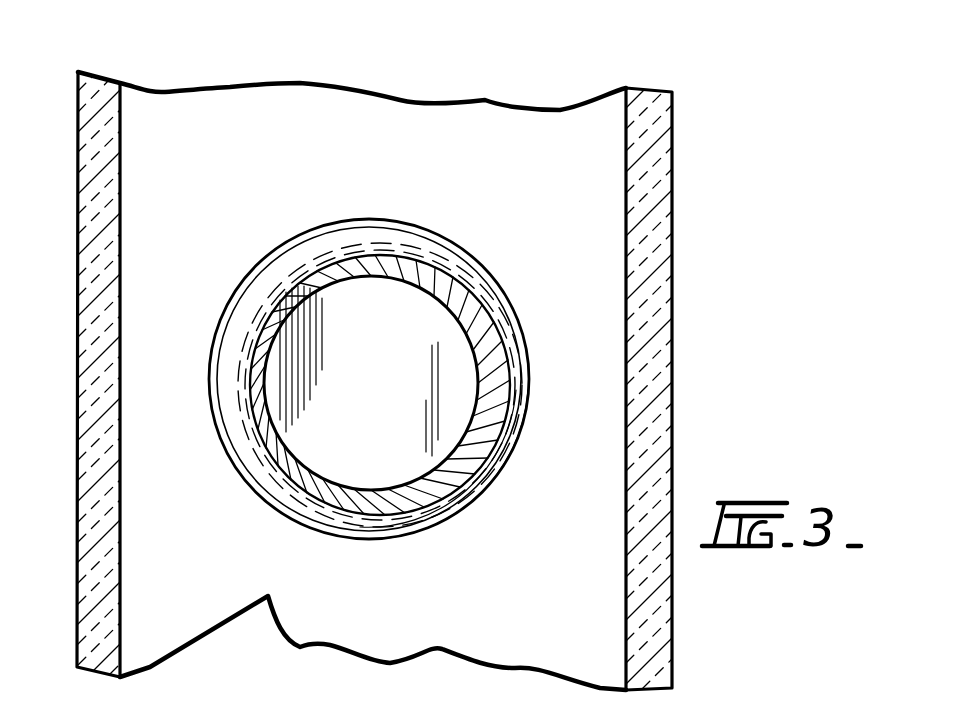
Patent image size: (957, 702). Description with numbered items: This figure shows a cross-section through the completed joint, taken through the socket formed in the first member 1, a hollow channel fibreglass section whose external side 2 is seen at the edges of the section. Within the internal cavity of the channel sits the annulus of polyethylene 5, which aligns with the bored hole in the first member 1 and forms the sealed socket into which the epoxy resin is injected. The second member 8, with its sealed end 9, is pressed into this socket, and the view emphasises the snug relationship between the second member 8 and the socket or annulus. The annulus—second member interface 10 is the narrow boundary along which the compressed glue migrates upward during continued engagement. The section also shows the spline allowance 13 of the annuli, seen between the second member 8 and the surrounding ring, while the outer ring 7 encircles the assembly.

The bearing assembly 1 is at (495, 138).
The housing wall 2 is at (572, 227).
The bearing ring 5 is at (467, 273).
The outer ring 7 is at (263, 263).
The retaining ring 8 is at (262, 346).
The bore 9 is at (372, 418).
The mounting plate 10 is at (132, 374).
The sealing lips 13 is at (520, 425).